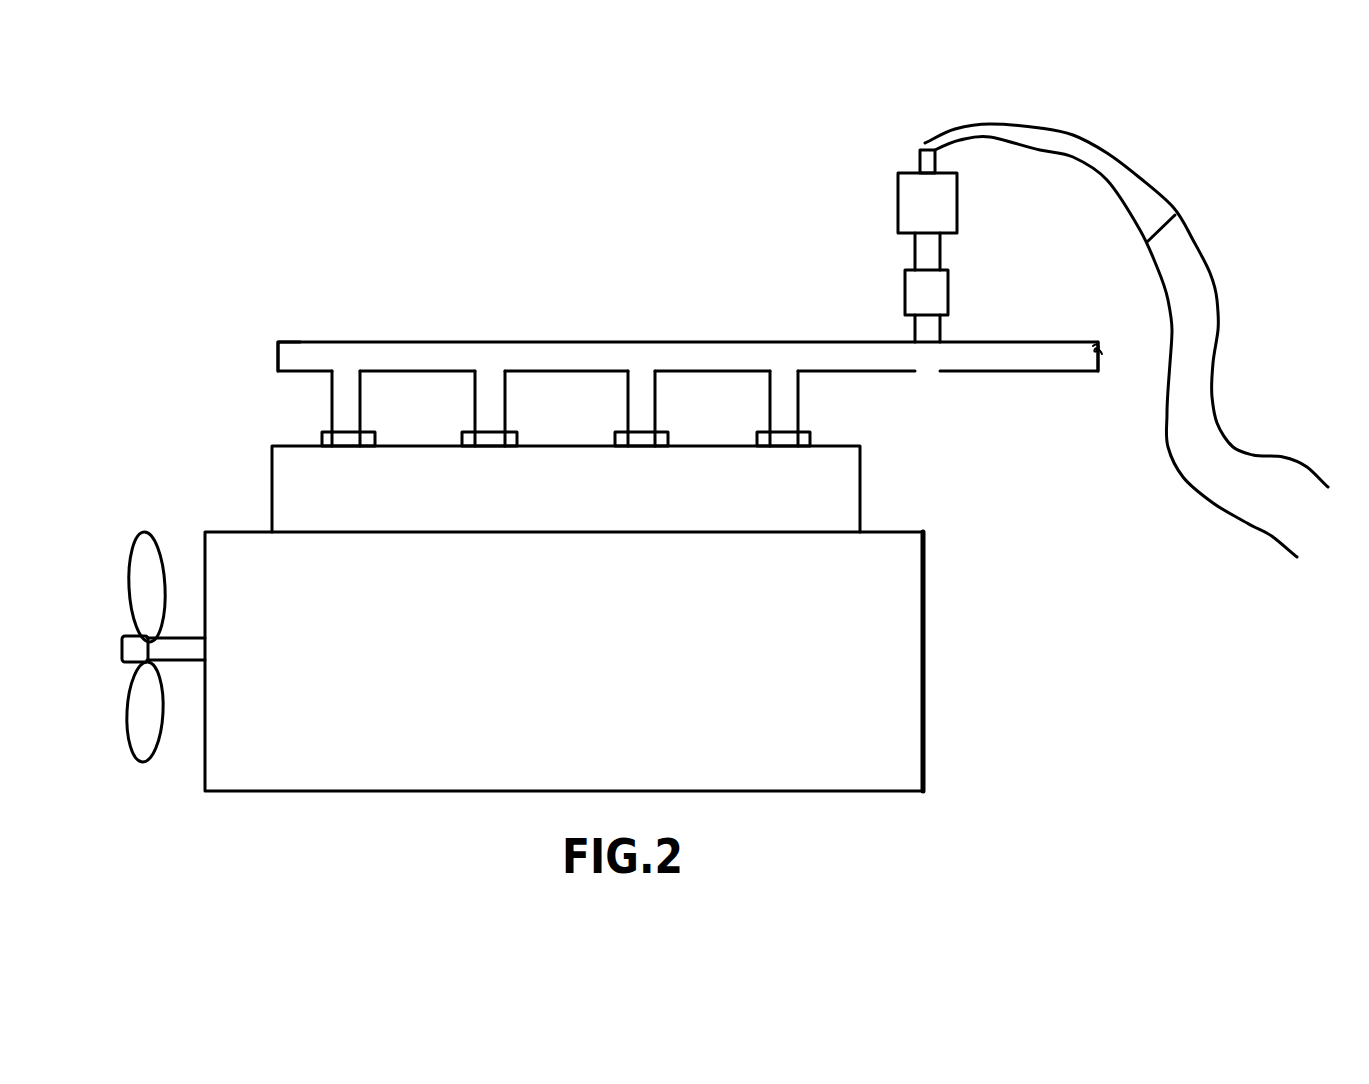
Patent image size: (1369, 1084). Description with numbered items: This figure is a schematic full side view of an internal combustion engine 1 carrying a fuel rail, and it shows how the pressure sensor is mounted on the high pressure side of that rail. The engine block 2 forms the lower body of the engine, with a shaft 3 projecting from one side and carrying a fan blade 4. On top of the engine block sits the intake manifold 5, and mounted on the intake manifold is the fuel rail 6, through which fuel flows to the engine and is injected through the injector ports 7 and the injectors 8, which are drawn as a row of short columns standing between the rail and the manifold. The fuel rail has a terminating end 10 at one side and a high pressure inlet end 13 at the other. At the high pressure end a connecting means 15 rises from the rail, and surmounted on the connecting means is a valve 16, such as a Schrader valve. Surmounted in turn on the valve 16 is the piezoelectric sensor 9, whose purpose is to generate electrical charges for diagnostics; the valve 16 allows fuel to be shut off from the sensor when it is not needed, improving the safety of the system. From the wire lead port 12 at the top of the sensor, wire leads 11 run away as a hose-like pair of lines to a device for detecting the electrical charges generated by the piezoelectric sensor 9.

The internal combustion engine 1 is at (960, 657).
The engine block 2 is at (927, 708).
The shaft 3 is at (190, 663).
The fan blade 4 is at (123, 588).
The intake manifold 5 is at (287, 475).
The fuel rail 6 is at (793, 342).
The injector ports 7 is at (505, 388).
The injectors 8 is at (370, 432).
The piezoelectric sensor 9 is at (897, 205).
The terminating end 10 is at (280, 342).
The wire leads 11 is at (1175, 215).
The wire lead port 12 is at (935, 162).
The high pressure inlet end 13 is at (1098, 357).
The connecting means 15 is at (940, 328).
The valve 16 is at (948, 283).